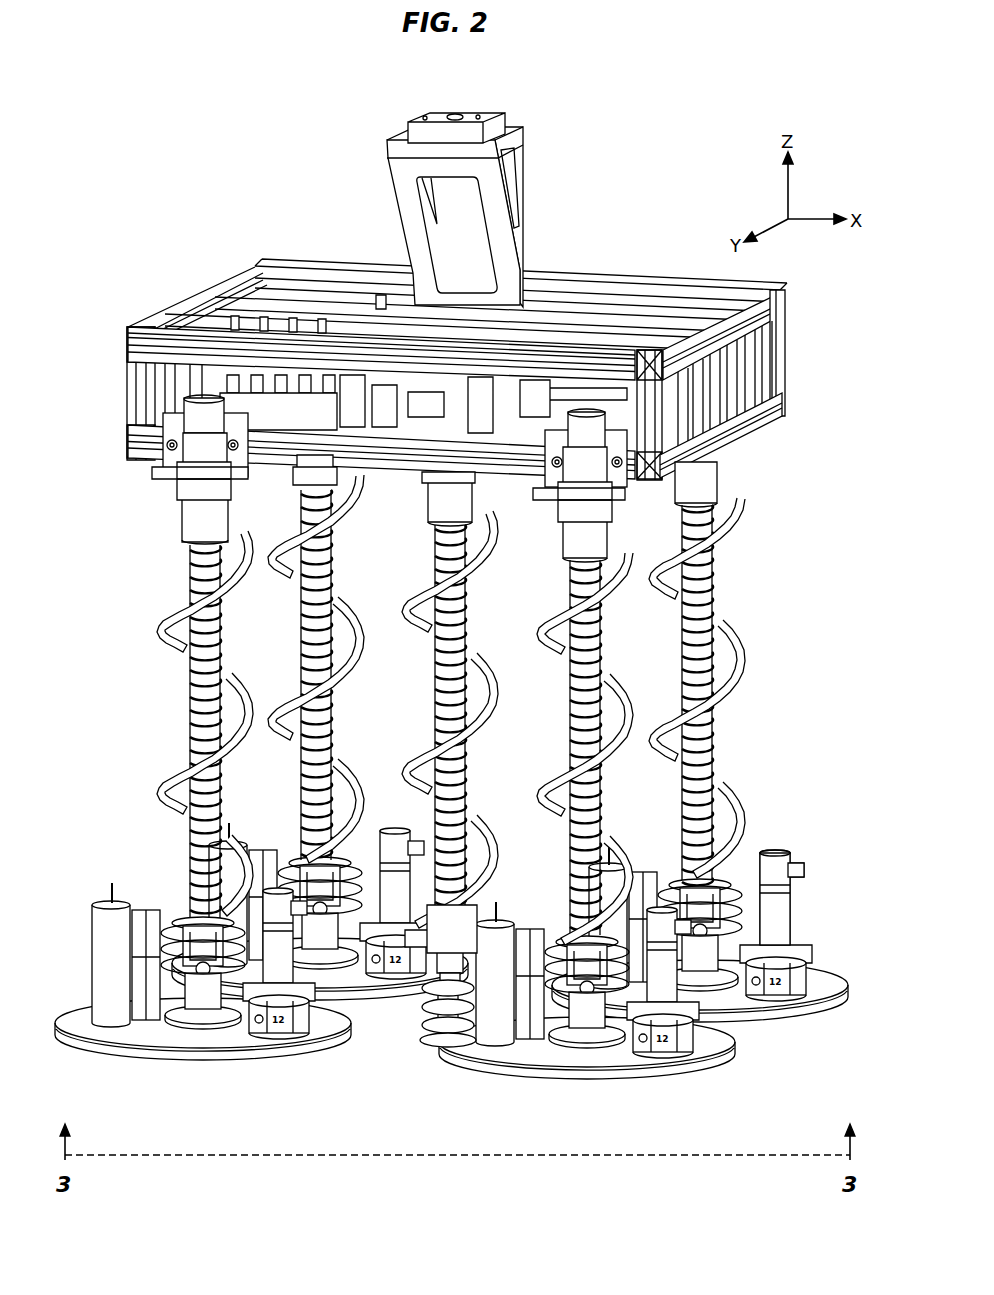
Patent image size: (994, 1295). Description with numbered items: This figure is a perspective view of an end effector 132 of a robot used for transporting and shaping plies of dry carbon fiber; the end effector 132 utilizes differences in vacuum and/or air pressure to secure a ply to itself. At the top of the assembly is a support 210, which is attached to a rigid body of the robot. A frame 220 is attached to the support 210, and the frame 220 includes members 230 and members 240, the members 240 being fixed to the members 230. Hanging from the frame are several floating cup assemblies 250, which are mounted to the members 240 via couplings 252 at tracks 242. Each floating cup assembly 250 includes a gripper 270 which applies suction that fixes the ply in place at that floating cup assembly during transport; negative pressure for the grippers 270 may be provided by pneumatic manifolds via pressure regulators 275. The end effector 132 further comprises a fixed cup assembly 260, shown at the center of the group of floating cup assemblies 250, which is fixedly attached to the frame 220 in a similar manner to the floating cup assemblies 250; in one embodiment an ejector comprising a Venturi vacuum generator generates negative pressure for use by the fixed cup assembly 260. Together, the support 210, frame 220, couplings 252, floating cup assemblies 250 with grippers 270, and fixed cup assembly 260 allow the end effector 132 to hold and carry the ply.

The end effector 132 is at (483, 353).
The support 210 is at (526, 178).
The frame 220 is at (790, 293).
The member 230 is at (770, 421).
The member 240 is at (391, 463).
The track 242 is at (516, 457).
The floating cup assembly 250 is at (148, 1066).
The coupling 252 is at (168, 448).
The fixed cup assembly 260 is at (412, 1042).
The gripper 270 is at (782, 932).
The pressure regulator 275 is at (778, 860).